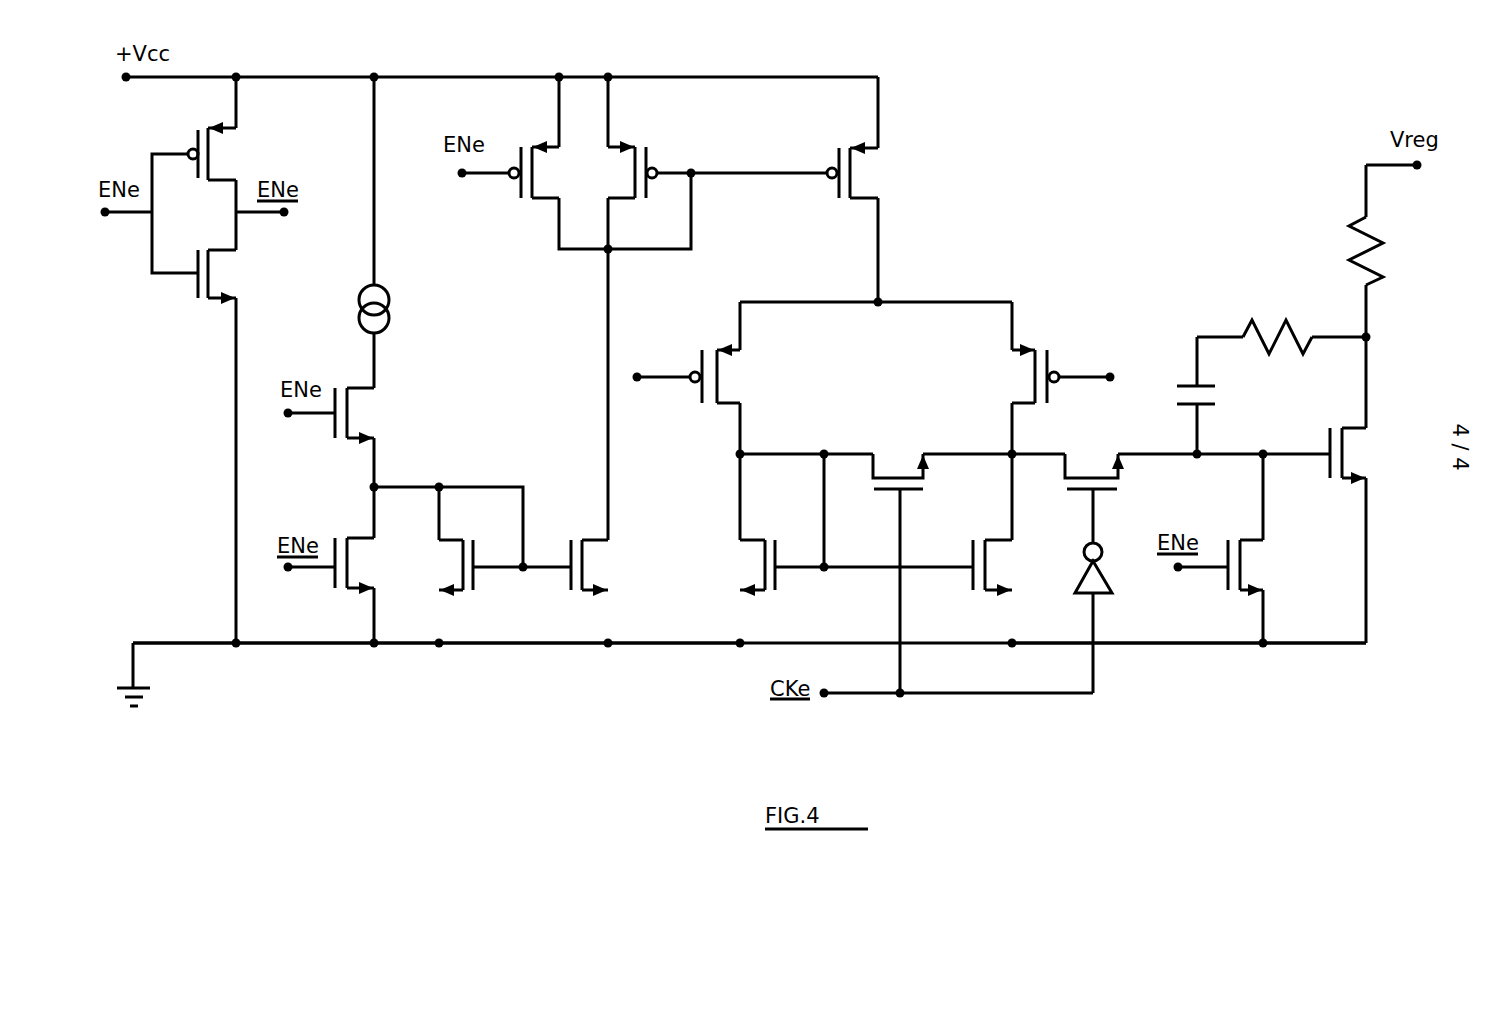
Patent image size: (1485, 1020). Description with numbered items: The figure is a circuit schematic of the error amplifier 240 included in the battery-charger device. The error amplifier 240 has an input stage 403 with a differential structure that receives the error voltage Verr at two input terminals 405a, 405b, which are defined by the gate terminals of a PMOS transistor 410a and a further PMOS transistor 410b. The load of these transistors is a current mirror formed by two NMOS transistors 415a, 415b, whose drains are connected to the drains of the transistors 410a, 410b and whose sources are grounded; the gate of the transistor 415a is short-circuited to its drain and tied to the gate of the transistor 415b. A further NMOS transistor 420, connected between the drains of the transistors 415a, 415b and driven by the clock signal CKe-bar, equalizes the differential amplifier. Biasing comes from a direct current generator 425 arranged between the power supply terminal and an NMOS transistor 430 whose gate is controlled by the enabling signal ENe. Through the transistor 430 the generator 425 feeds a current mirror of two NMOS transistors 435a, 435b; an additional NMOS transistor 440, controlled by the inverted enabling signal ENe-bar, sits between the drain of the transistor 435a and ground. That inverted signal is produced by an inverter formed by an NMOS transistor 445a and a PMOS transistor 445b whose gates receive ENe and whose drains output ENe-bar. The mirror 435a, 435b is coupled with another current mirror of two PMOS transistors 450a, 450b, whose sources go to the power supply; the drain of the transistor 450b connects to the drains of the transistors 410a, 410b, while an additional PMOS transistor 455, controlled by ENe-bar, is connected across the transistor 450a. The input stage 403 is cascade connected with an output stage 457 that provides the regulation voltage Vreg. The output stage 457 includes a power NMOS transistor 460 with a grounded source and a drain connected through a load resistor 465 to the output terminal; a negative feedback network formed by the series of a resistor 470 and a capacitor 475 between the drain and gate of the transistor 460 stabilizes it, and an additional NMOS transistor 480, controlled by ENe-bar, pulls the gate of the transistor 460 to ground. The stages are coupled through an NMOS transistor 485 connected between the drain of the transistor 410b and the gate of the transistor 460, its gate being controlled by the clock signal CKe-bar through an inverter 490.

The error amplifier 240 is at (1163, 144).
The input stage 403 is at (486, 693).
The input terminal 405a is at (640, 370).
The input terminal 405b is at (1110, 372).
The PMOS transistor 410a is at (733, 378).
The PMOS transistor 410b is at (1025, 388).
The NMOS transistor 415a is at (745, 560).
The NMOS transistor 415b is at (1002, 602).
The NMOS transistor 420 is at (897, 460).
The generator 425 is at (387, 325).
The NMOS transistor 430 is at (368, 407).
The NMOS transistor 435a is at (463, 595).
The NMOS transistor 435b is at (600, 568).
The NMOS transistor 440 is at (360, 533).
The NMOS transistor 445a is at (213, 303).
The PMOS transistor 445b is at (232, 155).
The PMOS transistor 450a is at (657, 155).
The PMOS transistor 450b is at (875, 177).
The PMOS transistor 455 is at (545, 203).
The output stage 457 is at (1267, 696).
The power NMOS transistor 460 is at (1365, 465).
The load resistor 465 is at (1382, 235).
The resistor 470 is at (1292, 318).
The capacitor 475 is at (1212, 408).
The NMOS transistor 480 is at (1263, 568).
The NMOS transistor 485 is at (1123, 482).
The inverter 490 is at (1103, 595).